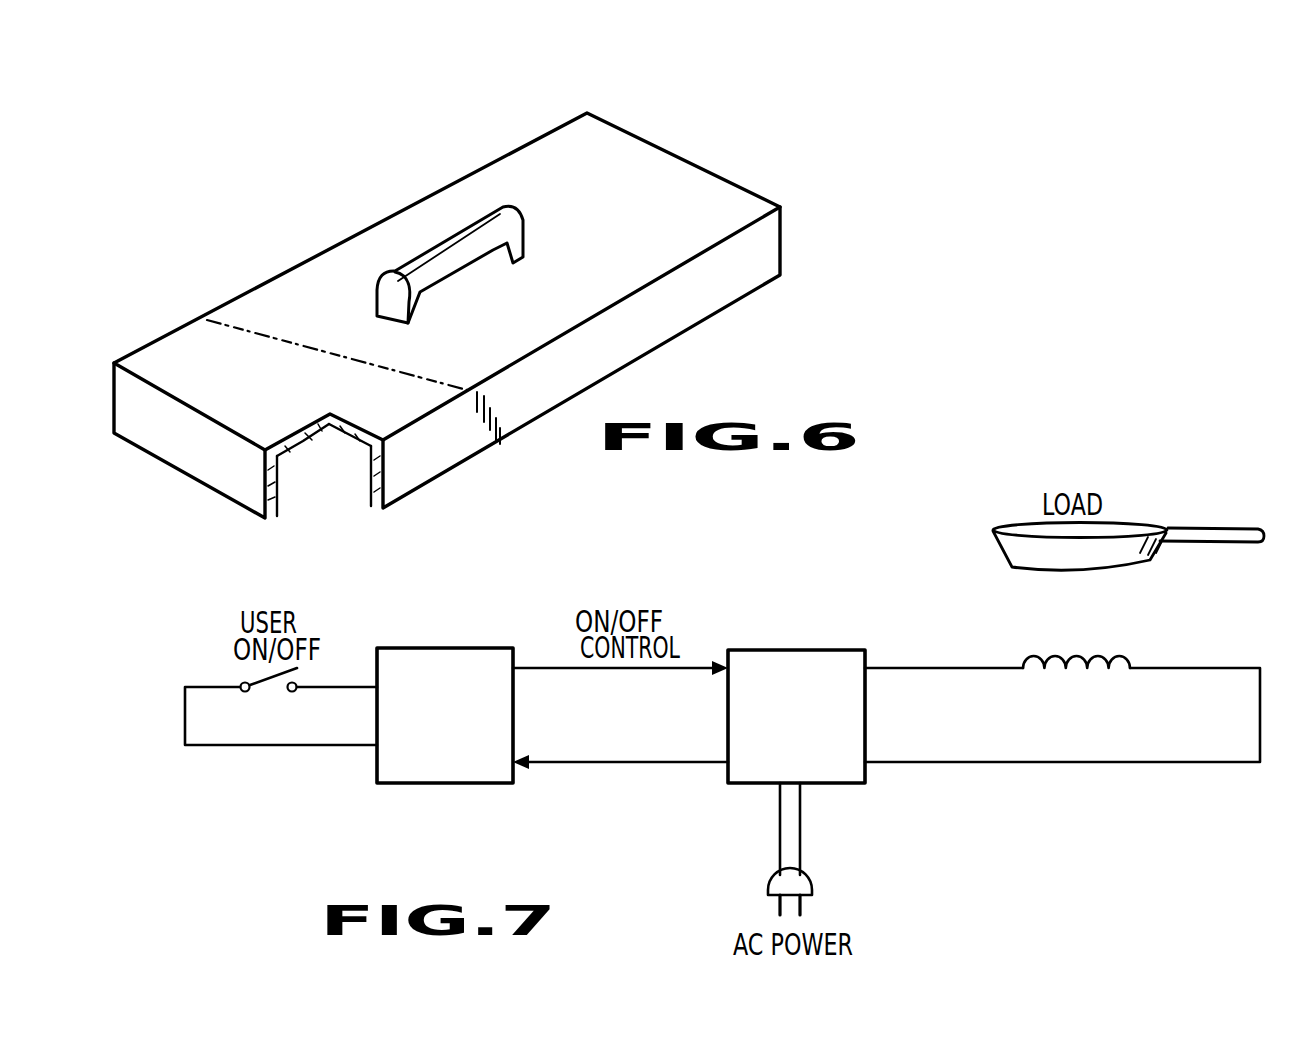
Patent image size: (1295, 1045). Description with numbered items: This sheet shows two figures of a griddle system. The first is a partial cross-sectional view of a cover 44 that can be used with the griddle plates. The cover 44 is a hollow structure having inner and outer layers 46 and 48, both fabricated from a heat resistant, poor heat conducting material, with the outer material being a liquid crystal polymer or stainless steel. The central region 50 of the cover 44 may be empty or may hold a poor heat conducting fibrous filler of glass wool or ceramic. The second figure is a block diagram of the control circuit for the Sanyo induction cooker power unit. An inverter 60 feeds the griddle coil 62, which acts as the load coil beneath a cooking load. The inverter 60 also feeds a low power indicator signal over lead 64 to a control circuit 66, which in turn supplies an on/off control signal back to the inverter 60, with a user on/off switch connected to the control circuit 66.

In FIG. 6, the cover 44 is at (519, 324).
In FIG. 6, the inner layer 46 is at (223, 488).
In FIG. 6, the outer layer 48 is at (282, 492).
In FIG. 6, the central region 50 is at (373, 508).
In FIG. 7, the inverter 60 is at (805, 658).
In FIG. 7, the griddle coil 62 is at (1122, 656).
In FIG. 7, the lead 64 is at (550, 761).
In FIG. 7, the control circuit 66 is at (428, 783).